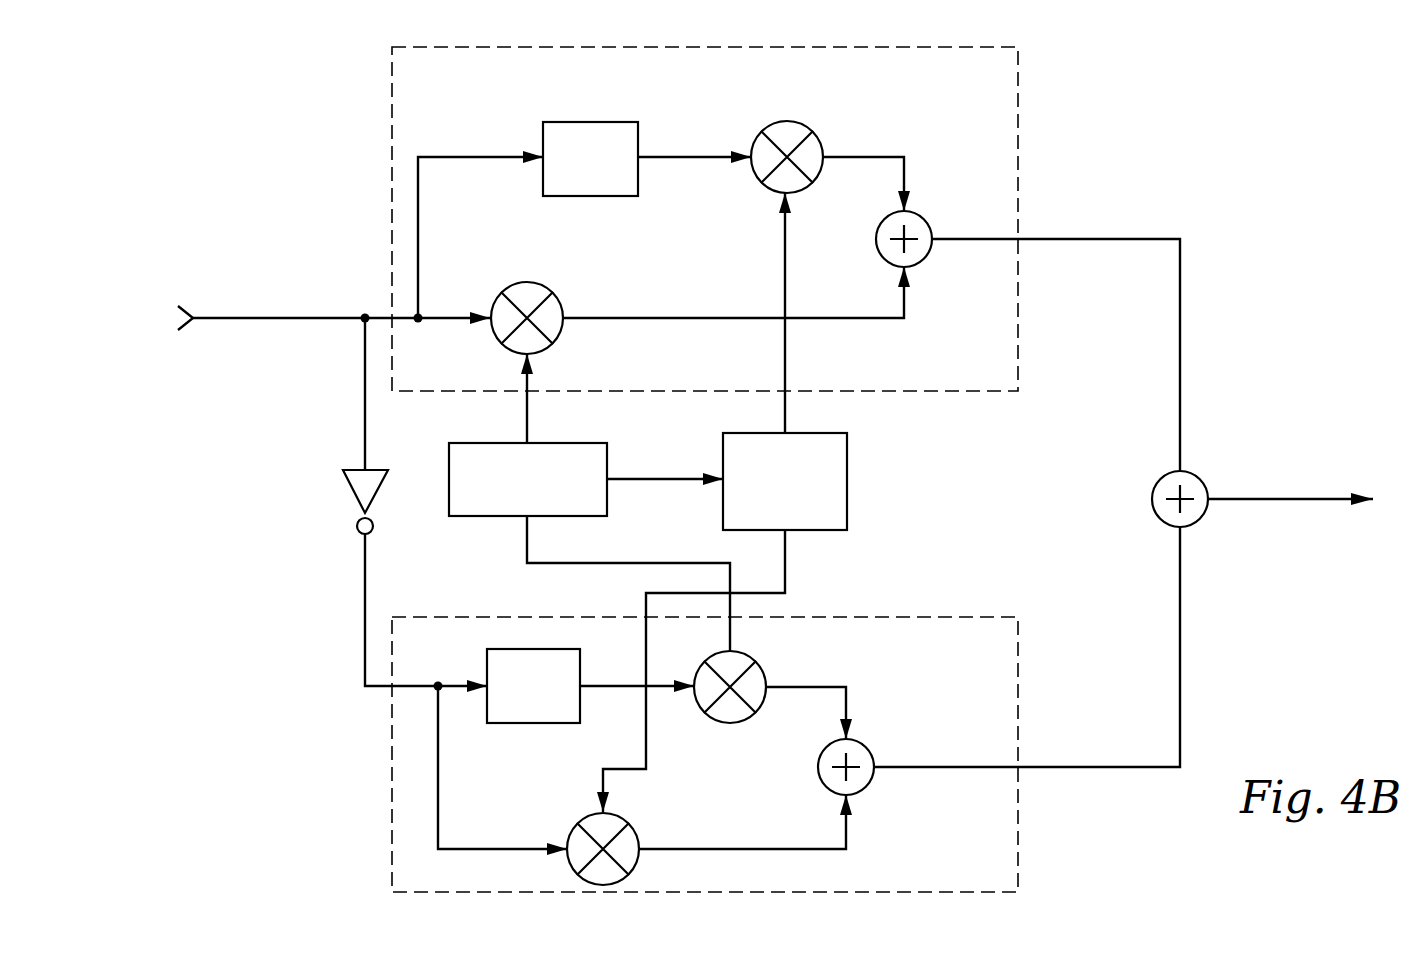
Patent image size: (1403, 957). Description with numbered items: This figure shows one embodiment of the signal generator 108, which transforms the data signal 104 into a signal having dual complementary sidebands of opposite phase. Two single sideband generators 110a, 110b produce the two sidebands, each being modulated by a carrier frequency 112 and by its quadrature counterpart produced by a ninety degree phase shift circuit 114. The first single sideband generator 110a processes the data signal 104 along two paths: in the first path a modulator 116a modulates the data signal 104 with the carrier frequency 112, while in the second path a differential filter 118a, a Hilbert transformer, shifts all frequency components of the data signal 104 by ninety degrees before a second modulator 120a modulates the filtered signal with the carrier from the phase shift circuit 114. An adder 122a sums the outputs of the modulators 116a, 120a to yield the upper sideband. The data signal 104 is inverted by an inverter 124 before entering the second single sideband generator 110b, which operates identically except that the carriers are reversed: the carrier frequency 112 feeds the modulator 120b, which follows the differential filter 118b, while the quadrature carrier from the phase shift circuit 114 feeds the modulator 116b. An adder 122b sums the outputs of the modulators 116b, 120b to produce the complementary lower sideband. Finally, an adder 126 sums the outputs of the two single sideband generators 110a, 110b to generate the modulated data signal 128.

The data signal 104 is at (206, 322).
The signal generator 108 is at (292, 596).
The single sideband generator 110a is at (390, 150).
The single sideband generator 110b is at (404, 790).
The carrier frequency 112 is at (470, 516).
The 90° phase shift circuit 114 is at (847, 490).
The modulator 116a is at (530, 282).
The modulator 116b is at (632, 833).
The differential filter 118a is at (628, 122).
The differential filter 118b is at (518, 723).
The second modulator 120a is at (800, 123).
The modulator 120b is at (756, 712).
The adder 122a is at (922, 258).
The adder 122b is at (818, 782).
The inverter 124 is at (348, 498).
The adder 126 is at (1193, 525).
The modulated data signal 128 is at (1328, 502).